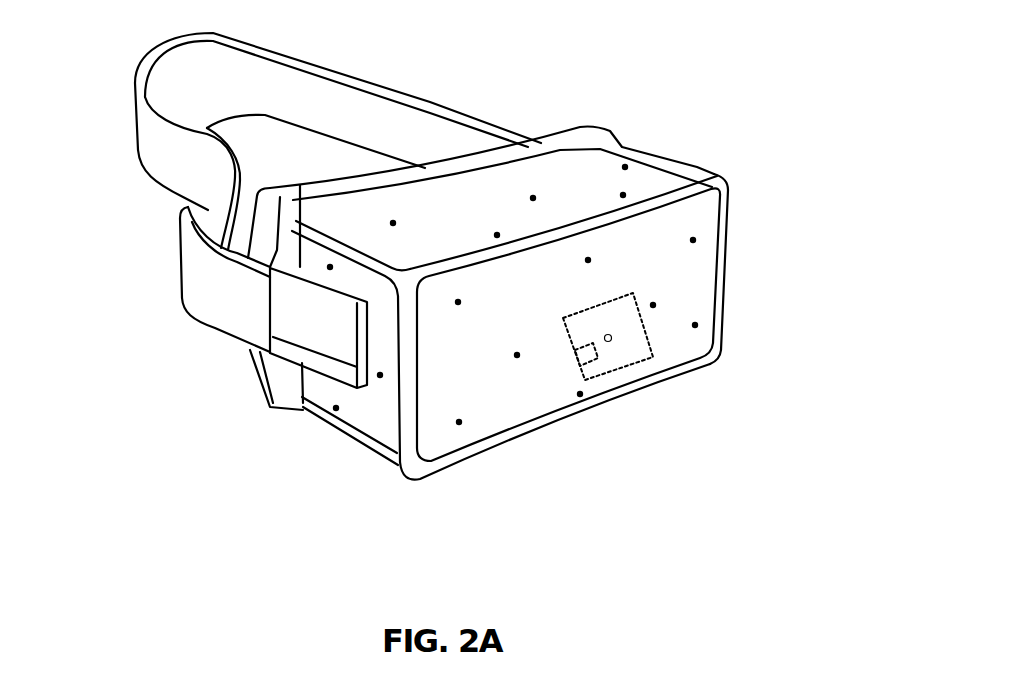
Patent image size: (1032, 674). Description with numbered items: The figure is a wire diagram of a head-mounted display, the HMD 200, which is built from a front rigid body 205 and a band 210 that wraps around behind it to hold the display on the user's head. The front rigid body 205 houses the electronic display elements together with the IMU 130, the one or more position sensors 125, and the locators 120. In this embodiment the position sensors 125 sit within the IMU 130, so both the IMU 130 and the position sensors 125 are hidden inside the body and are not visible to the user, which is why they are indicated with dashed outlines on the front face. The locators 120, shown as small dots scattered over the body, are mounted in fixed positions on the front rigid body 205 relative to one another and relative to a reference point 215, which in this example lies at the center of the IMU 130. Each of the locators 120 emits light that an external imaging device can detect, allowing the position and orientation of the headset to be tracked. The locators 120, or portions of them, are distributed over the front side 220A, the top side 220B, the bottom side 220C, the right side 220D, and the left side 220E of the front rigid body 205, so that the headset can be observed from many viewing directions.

The HMD 200 is at (18, 32).
The band 210 is at (437, 92).
The front rigid body 205 is at (491, 319).
The front side 220A is at (447, 445).
The top side 220B is at (368, 223).
The bottom side 220C is at (333, 445).
The right side 220D is at (371, 410).
The left side 220E is at (694, 167).
The locators 120 is at (702, 321).
The position sensors 125 is at (585, 363).
The IMU 130 is at (657, 354).
The reference point 215 is at (611, 346).